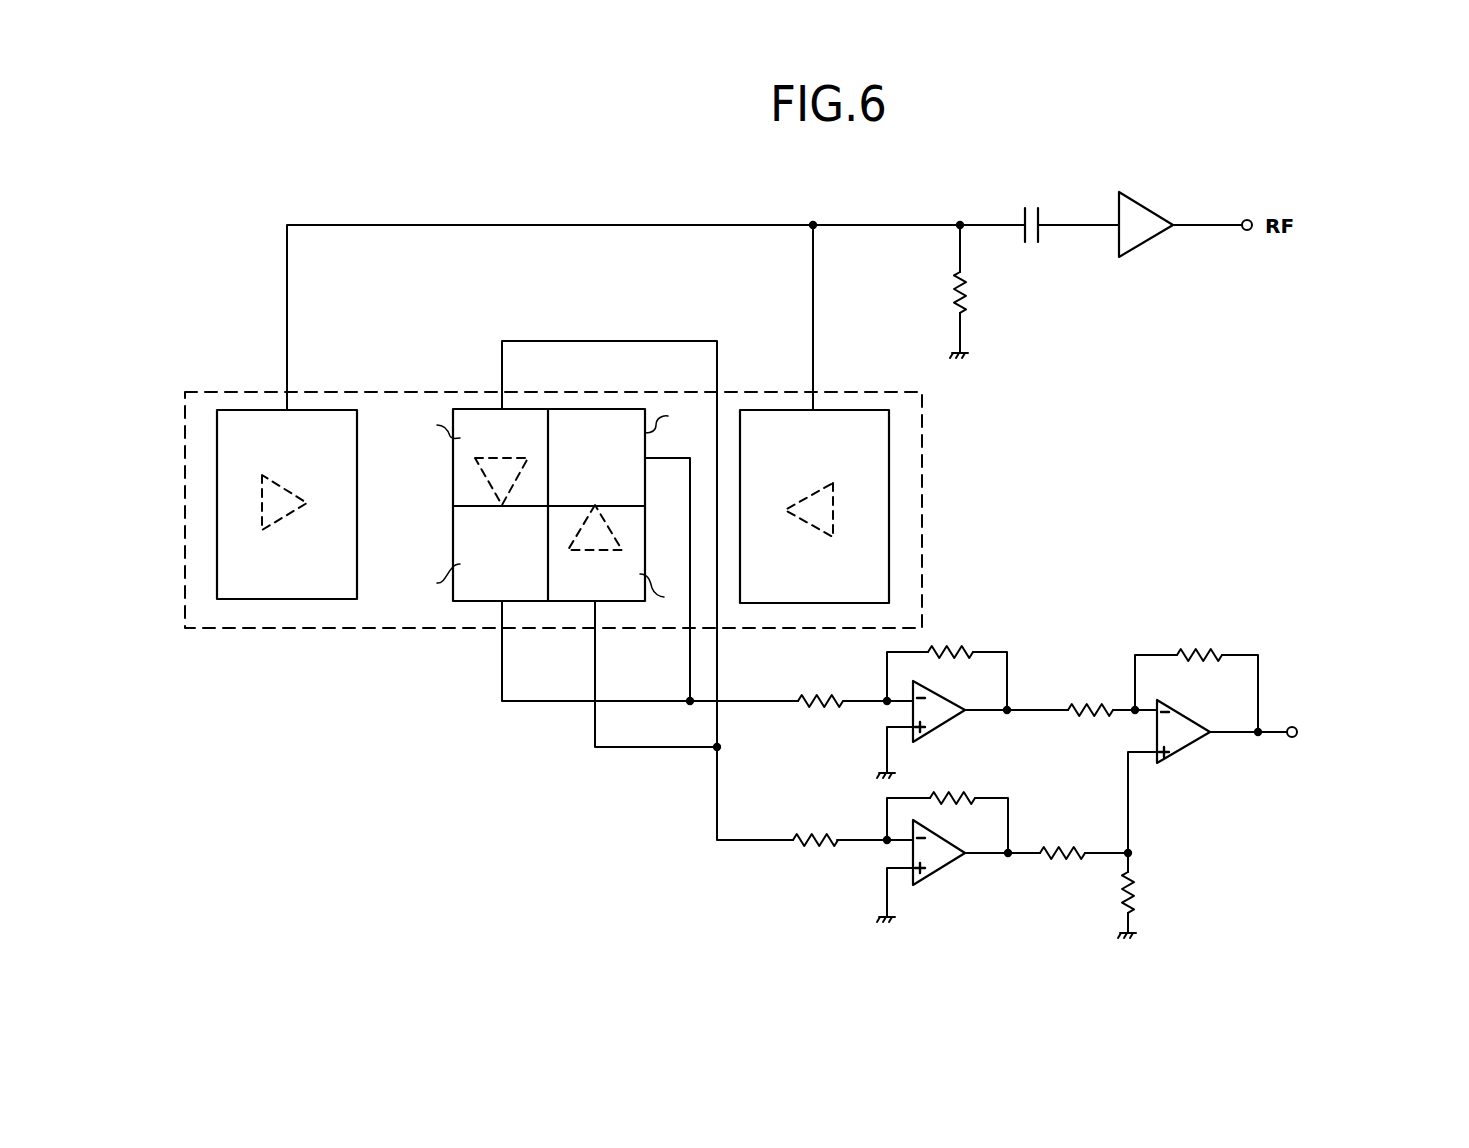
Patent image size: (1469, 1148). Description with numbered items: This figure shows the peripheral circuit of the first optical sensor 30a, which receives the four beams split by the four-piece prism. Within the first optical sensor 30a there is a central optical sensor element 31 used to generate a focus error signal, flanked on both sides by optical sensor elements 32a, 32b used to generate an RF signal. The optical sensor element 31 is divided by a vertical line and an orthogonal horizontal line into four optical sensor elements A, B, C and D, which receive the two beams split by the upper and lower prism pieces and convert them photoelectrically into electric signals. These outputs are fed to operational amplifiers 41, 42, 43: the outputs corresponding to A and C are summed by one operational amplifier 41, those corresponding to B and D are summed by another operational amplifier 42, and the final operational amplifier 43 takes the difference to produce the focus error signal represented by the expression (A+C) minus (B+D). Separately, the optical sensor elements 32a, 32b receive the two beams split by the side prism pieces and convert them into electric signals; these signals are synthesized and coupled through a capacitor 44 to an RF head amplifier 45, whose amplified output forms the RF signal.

The first optical sensor 30a is at (922, 440).
The optical sensor element 31 is at (468, 409).
The optical sensor element 32a is at (889, 518).
The optical sensor element 32b is at (252, 595).
The operational amplifier 41 is at (943, 723).
The operational amplifier 42 is at (945, 866).
The operational amplifier 43 is at (1190, 746).
The capacitor 44 is at (1030, 208).
The RF head amplifier 45 is at (1158, 215).